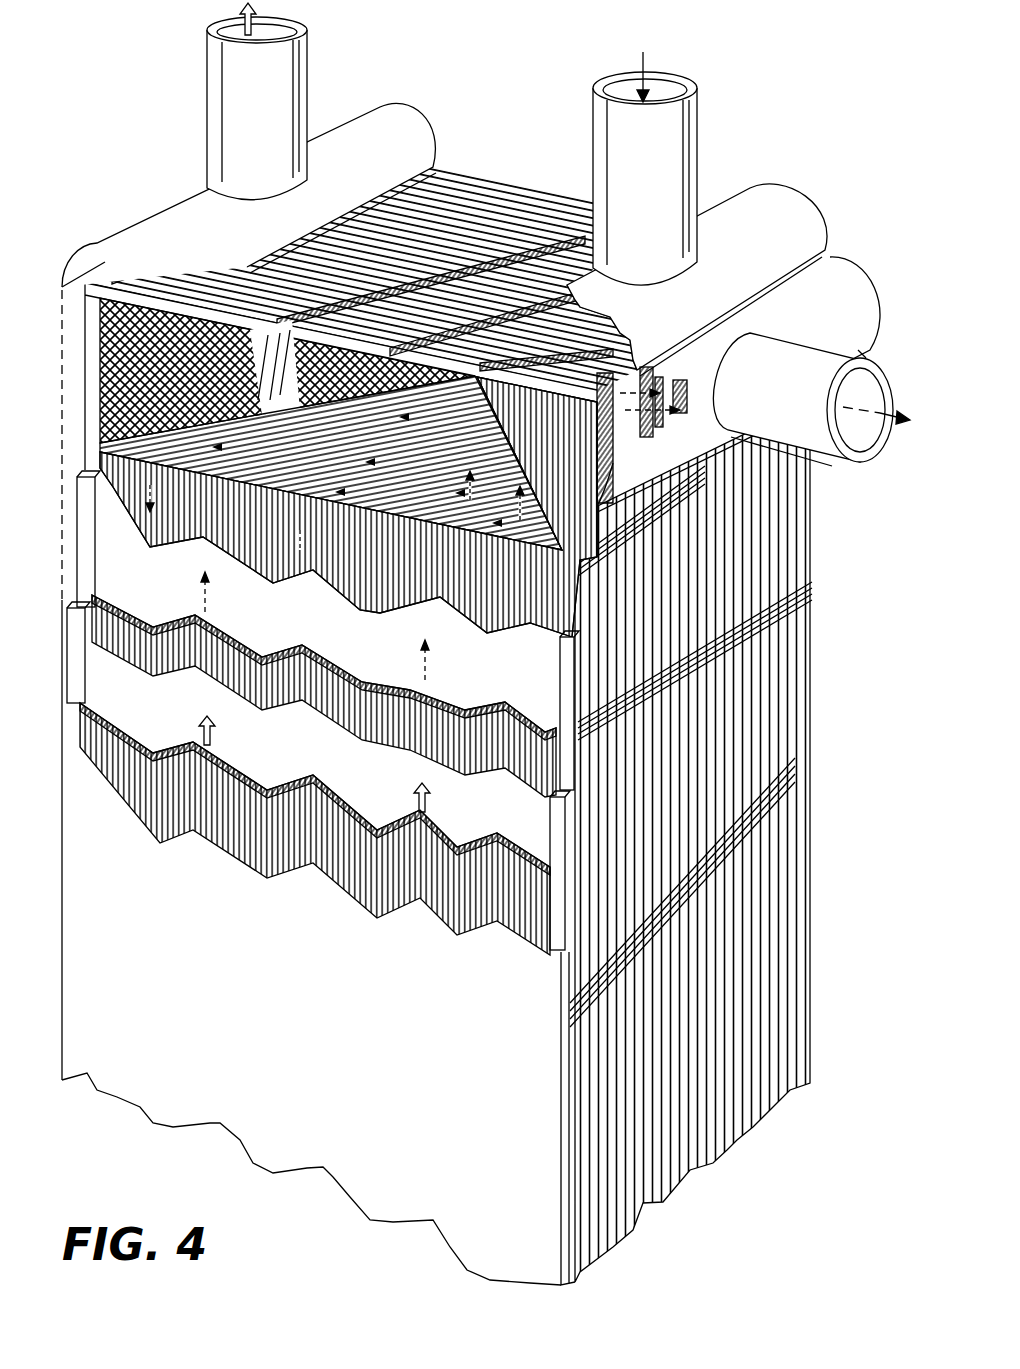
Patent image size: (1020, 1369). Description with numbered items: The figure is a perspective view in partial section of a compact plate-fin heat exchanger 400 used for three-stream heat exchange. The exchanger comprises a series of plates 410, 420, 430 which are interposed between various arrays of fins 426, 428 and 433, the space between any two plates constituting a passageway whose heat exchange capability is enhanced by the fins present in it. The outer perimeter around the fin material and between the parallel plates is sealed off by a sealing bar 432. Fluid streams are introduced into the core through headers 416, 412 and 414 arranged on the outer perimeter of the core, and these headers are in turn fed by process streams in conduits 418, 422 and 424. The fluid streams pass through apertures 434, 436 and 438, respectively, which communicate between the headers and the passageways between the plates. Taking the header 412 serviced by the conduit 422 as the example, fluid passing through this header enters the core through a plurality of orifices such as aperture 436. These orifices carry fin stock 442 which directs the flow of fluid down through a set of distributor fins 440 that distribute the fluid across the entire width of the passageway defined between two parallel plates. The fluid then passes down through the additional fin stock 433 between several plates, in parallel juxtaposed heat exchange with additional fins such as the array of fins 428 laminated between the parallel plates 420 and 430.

The compact plate-fin heat exchanger 400 is at (816, 655).
The plate 410 is at (268, 965).
The header 412 is at (733, 242).
The header 414 is at (794, 325).
The header 416 is at (346, 158).
The conduit 418 is at (230, 105).
The plate 420 is at (271, 743).
The conduit 422 is at (619, 175).
The conduit 424 is at (751, 395).
The array of fins 426 is at (140, 783).
The array of fins 428 is at (177, 660).
The plate 430 is at (284, 615).
The sealing bar 432 is at (80, 650).
The array of fins 433 is at (190, 520).
The aperture 434 is at (361, 278).
The aperture 436 is at (613, 317).
The aperture 438 is at (633, 437).
The distributor fins 440 is at (483, 530).
The fin stock 442 is at (540, 537).